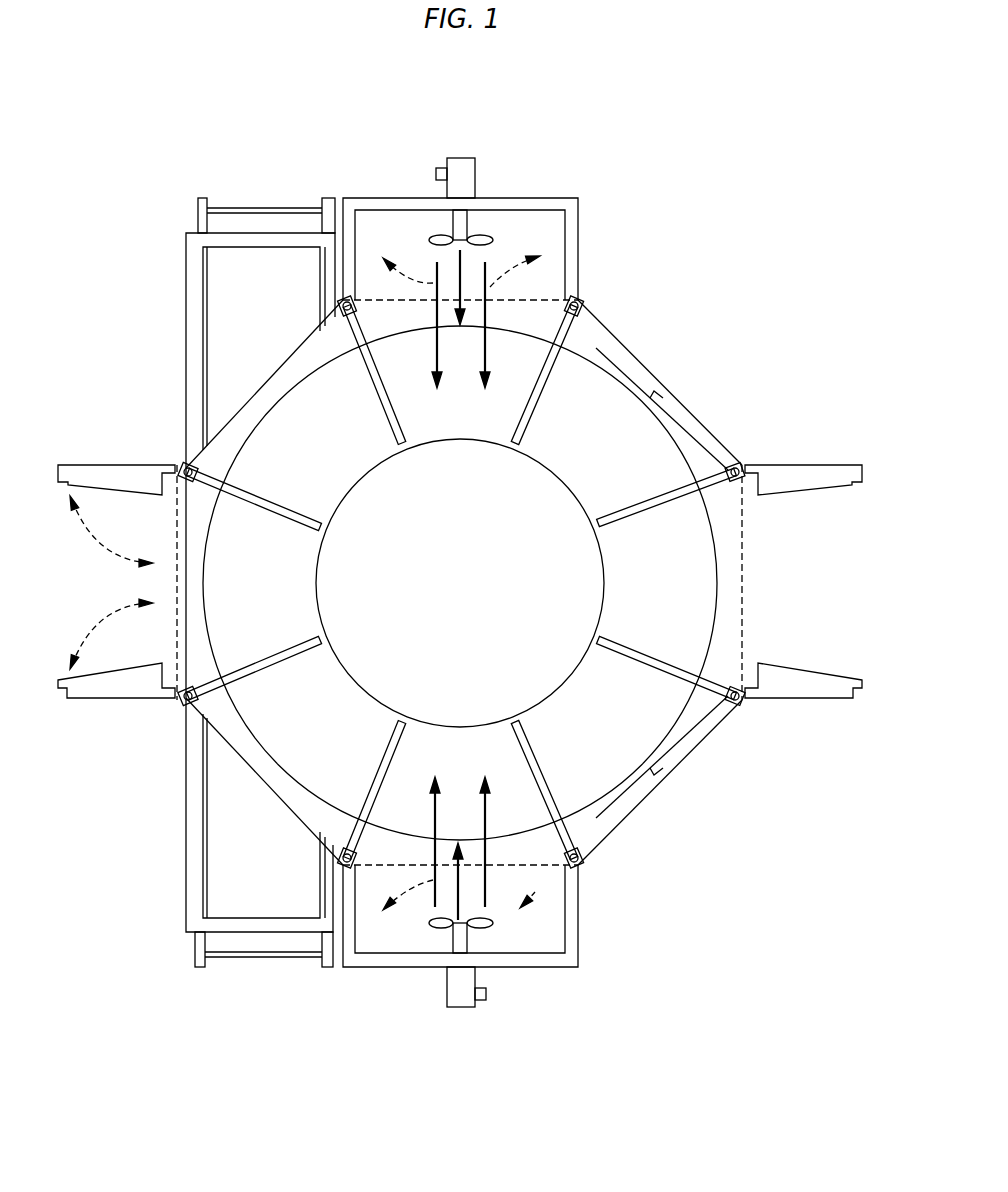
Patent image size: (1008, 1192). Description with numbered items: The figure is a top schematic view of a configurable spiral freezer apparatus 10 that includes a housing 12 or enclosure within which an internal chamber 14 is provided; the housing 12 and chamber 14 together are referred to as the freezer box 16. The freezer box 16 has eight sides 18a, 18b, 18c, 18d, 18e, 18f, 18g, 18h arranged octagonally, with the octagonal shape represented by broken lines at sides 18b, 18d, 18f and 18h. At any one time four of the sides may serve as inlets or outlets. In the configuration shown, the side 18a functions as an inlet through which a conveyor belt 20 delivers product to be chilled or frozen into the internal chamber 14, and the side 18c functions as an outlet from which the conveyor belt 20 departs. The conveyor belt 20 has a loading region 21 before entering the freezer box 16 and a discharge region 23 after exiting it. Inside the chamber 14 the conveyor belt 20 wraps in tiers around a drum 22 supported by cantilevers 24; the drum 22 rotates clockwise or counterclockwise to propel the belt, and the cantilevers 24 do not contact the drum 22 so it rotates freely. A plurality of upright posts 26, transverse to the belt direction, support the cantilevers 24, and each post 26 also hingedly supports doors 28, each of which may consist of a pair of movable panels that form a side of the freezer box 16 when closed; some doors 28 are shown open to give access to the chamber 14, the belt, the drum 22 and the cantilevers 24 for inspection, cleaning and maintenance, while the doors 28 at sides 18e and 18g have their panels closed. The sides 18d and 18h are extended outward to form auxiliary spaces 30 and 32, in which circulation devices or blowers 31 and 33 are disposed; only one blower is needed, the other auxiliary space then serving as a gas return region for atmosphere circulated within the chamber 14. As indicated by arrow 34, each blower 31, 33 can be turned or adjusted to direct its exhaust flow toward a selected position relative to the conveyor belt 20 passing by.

The configurable spiral freezer apparatus 10 is at (662, 130).
The housing 12 is at (580, 284).
The internal chamber 14 is at (284, 376).
The freezer box 16 is at (598, 226).
The side 18a is at (243, 398).
The side 18b is at (175, 585).
The side 18c is at (257, 780).
The side 18d is at (368, 866).
The side 18e is at (640, 808).
The side 18f is at (748, 585).
The side 18g is at (638, 358).
The side 18h is at (541, 300).
The conveyor belt 20 is at (241, 302).
The loading region 21 is at (222, 268).
The drum 22 is at (352, 490).
The discharge region 23 is at (217, 893).
The cantilevers 24 is at (285, 522).
The posts 26 is at (741, 465).
The doors 28 is at (100, 465).
The auxiliary space 30 is at (546, 935).
The blower 31 is at (468, 937).
The auxiliary space 32 is at (368, 224).
The blower 33 is at (468, 224).
The arrow 34 is at (433, 283).